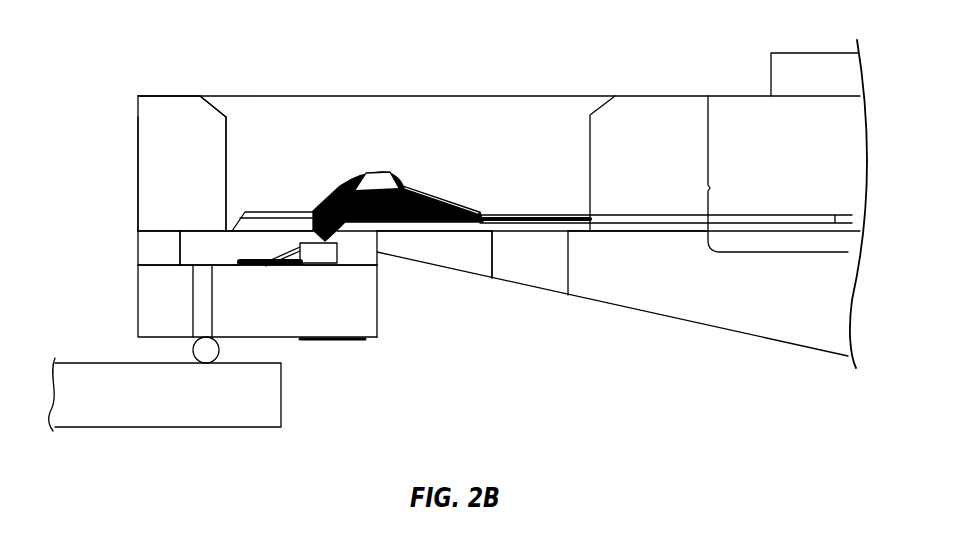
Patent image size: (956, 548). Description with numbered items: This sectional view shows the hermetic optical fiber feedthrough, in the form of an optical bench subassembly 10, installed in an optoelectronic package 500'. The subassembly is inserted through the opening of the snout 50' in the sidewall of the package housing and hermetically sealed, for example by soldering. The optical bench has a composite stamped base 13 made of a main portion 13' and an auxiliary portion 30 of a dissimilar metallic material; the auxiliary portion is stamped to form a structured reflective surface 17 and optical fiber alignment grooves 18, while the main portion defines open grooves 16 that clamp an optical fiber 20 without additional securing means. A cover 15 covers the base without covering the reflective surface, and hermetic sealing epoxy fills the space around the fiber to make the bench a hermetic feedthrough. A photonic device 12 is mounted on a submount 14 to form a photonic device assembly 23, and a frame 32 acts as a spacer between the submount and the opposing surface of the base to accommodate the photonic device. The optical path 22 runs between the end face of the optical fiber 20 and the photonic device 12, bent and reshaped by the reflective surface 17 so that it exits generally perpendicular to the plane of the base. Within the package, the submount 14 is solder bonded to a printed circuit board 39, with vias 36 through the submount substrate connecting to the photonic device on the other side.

The optical bench subassembly 10 is at (152, 43).
The base 13 is at (452, 204).
The main portion 13' is at (157, 120).
The auxiliary portion 30 is at (246, 195).
The frame 32 is at (180, 241).
The vias 36 is at (203, 296).
The submount 14 is at (365, 320).
The printed circuit board 39 is at (162, 408).
The photonic device 12 is at (337, 255).
The structured reflective surface 17 is at (340, 187).
The optical path 22 is at (395, 180).
The open grooves 16 is at (645, 213).
The optical fiber alignment grooves 18 is at (545, 213).
The optical fiber 20 is at (598, 232).
The cover 15 is at (770, 318).
The photonic device assembly 23 is at (400, 280).
The snout 50' is at (814, 48).
The optoelectronic package 500' is at (680, 437).